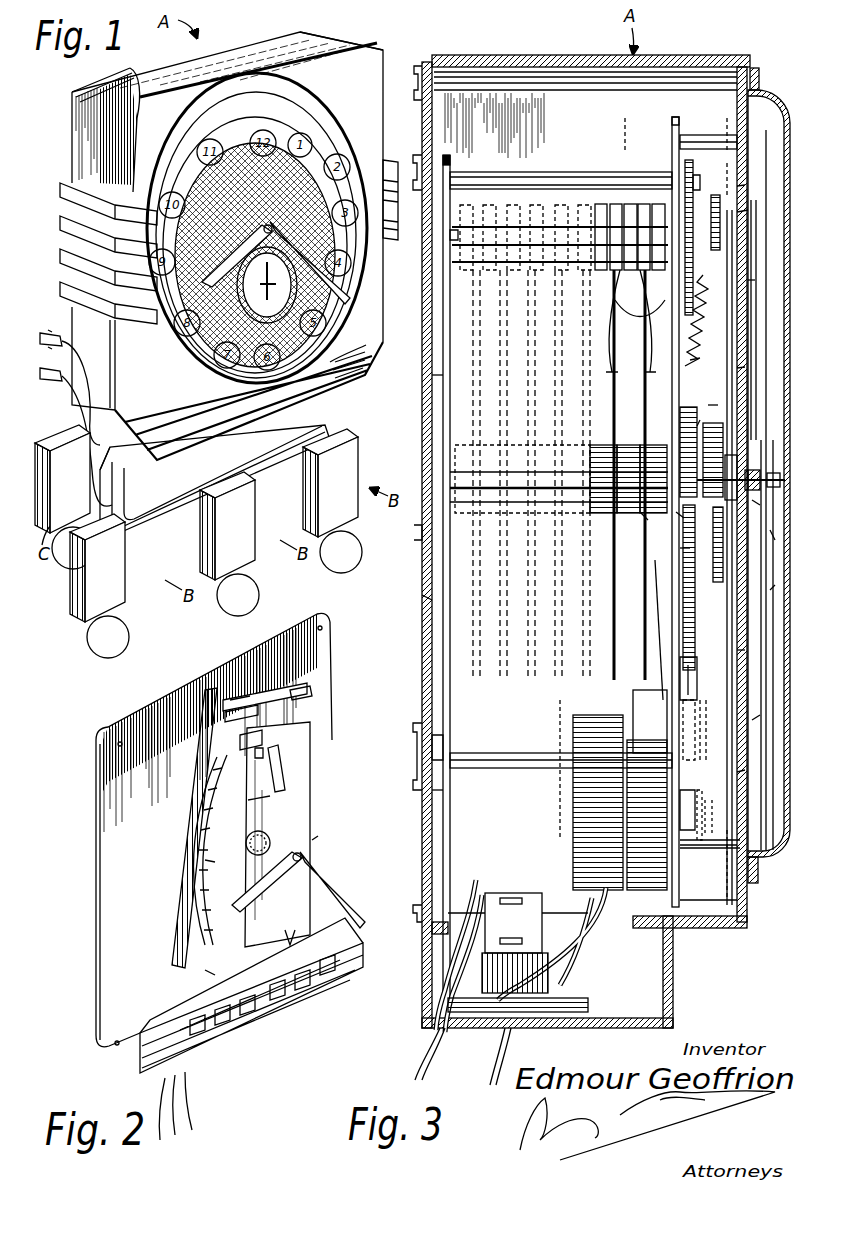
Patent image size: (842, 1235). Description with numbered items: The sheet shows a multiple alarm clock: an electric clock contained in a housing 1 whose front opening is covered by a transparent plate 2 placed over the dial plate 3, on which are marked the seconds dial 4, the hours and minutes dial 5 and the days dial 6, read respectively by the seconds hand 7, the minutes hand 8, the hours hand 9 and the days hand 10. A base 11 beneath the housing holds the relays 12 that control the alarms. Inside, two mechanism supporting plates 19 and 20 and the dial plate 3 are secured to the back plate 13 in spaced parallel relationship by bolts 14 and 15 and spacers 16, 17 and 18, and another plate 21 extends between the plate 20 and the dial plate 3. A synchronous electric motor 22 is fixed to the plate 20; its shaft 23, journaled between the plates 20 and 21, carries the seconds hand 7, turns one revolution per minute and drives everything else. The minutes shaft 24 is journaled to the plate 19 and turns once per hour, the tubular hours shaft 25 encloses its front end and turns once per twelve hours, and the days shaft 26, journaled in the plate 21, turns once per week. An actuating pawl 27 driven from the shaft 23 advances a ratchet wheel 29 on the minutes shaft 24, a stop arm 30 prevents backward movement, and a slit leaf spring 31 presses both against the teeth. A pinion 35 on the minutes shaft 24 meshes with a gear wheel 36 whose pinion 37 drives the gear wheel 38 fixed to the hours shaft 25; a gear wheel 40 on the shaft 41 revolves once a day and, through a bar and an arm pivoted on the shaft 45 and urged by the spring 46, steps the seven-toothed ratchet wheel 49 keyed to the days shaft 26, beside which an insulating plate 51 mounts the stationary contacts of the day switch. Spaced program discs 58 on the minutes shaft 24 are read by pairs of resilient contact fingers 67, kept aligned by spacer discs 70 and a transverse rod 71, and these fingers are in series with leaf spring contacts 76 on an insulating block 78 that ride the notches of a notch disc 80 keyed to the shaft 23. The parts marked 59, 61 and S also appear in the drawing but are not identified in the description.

In FIG. 1, the housing 1 is at (325, 50).
In FIG. 3, the housing 1 is at (530, 57).
In FIG. 3, the transparent plate 2 is at (758, 98).
In FIG. 3, the dial plate 3 is at (748, 188).
In FIG. 1, the seconds dial 4 is at (222, 353).
In FIG. 3, the seconds dial 4 is at (740, 108).
In FIG. 1, the hours and minutes dial 5 is at (376, 315).
In FIG. 3, the hours and minutes dial 5 is at (740, 177).
In FIG. 1, the days dial 6 is at (300, 136).
In FIG. 3, the days dial 6 is at (752, 215).
In FIG. 1, the seconds hand 7 is at (222, 364).
In FIG. 2, the seconds hand 7 is at (291, 927).
In FIG. 1, the minutes hand 8 is at (335, 363).
In FIG. 2, the minutes hand 8 is at (336, 905).
In FIG. 3, the minutes hand 8 is at (775, 540).
In FIG. 1, the hours hand 9 is at (165, 320).
In FIG. 2, the hours hand 9 is at (230, 893).
In FIG. 3, the hours hand 9 is at (775, 585).
In FIG. 1, the days hand 10 is at (302, 150).
In FIG. 2, the days hand 10 is at (283, 770).
In FIG. 3, the days hand 10 is at (748, 281).
In FIG. 1, the base 11 is at (298, 410).
In FIG. 2, the base 11 is at (345, 973).
In FIG. 3, the base 11 is at (673, 958).
In FIG. 2, the relays 12 is at (210, 1012).
In FIG. 3, the relays 12 is at (637, 144).
In FIG. 2, the back plate 13 is at (96, 890).
In FIG. 3, the back plate 13 is at (423, 603).
In FIG. 1, the bolt 14 is at (398, 190).
In FIG. 3, the bolt 14 is at (436, 178).
In FIG. 3, the bolt 15 is at (675, 120).
In FIG. 1, the spacer 16 is at (398, 162).
In FIG. 3, the spacer 16 is at (436, 168).
In FIG. 2, the spacer 17 is at (275, 712).
In FIG. 3, the spacer 17 is at (517, 187).
In FIG. 2, the spacer 18 is at (310, 698).
In FIG. 3, the spacer 18 is at (690, 147).
In FIG. 2, the mechanism supporting plate 19 is at (176, 951).
In FIG. 3, the mechanism supporting plate 19 is at (445, 372).
In FIG. 2, the mechanism supporting plate 20 is at (248, 801).
In FIG. 3, the mechanism supporting plate 20 is at (676, 375).
In FIG. 2, the plate 21 is at (300, 796).
In FIG. 3, the plate 21 is at (700, 421).
In FIG. 3, the synchronous electric motor 22 is at (585, 826).
In FIG. 3, the shaft 23 is at (763, 725).
In FIG. 3, the minutes shaft 24 is at (420, 532).
In FIG. 3, the tubular hours shaft 25 is at (750, 470).
In FIG. 3, the days shaft 26 is at (768, 236).
In FIG. 3, the actuating pawl 27 is at (680, 548).
In FIG. 2, the ratchet wheel 29 is at (250, 833).
In FIG. 3, the ratchet wheel 29 is at (686, 420).
In FIG. 3, the stop arm 30 is at (680, 520).
In FIG. 3, the slit leaf spring 31 is at (690, 650).
In FIG. 3, the pinion 35 is at (642, 515).
In FIG. 3, the gear wheel 36 is at (683, 450).
In FIG. 3, the pinion 37 is at (710, 405).
In FIG. 3, the gear wheel 38 is at (715, 498).
In FIG. 3, the gear wheel 40 is at (705, 595).
In FIG. 3, the shaft 41 is at (697, 369).
In FIG. 1, the shaft 45 is at (398, 230).
In FIG. 2, the shaft 45 is at (258, 705).
In FIG. 3, the shaft 45 is at (452, 235).
In FIG. 3, the spring 46 is at (705, 322).
In FIG. 3, the ratchet wheel 49 is at (721, 206).
In FIG. 3, the insulating plate 51 is at (683, 162).
In FIG. 2, the program discs 58 is at (210, 866).
In FIG. 3, the program discs 58 is at (613, 412).
In FIG. 3, the contact block 59 is at (606, 518).
In FIG. 3, the contact carriage 61 is at (540, 530).
In FIG. 3, the contact fingers 67 is at (628, 321).
In FIG. 3, the spacer discs 70 is at (598, 205).
In FIG. 2, the transverse rod 71 is at (238, 743).
In FIG. 3, the transverse rod 71 is at (478, 245).
In FIG. 3, the leaf spring contact 76 is at (711, 815).
In FIG. 3, the insulating block 78 is at (691, 810).
In FIG. 3, the notch disc 80 is at (700, 710).
In FIG. 2, the scale S is at (255, 752).
In FIG. 3, the scale S is at (699, 188).